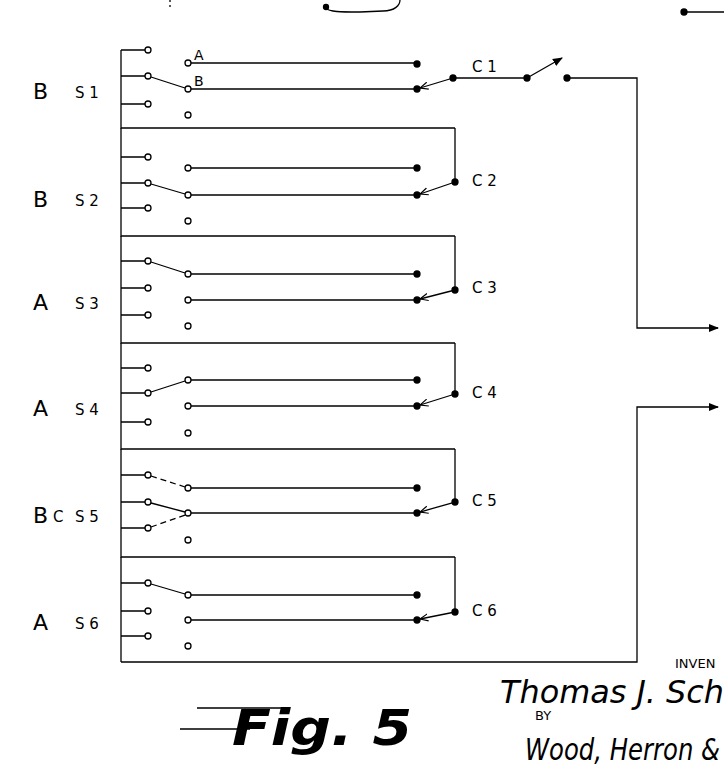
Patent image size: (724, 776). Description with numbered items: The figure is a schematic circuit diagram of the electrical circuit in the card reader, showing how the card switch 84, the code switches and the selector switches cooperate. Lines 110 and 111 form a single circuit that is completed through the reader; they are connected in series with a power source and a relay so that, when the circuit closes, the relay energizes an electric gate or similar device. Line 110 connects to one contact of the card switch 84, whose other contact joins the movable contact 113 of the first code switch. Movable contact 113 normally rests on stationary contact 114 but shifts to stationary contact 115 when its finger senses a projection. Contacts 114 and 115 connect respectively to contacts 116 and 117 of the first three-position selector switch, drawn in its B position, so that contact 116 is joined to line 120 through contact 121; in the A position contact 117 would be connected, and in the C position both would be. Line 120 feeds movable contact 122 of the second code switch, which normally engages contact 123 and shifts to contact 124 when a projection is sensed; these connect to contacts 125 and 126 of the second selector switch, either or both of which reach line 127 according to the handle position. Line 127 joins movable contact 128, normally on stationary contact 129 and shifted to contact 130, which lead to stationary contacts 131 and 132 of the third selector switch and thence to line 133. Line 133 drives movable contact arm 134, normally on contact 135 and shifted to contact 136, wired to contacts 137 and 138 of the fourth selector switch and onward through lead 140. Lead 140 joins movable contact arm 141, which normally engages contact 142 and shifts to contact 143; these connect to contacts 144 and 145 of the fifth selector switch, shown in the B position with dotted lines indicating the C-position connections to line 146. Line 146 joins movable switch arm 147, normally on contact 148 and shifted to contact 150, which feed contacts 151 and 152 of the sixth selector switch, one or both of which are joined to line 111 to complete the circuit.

The card switch 84 is at (552, 72).
The line 110 is at (682, 326).
The line 111 is at (240, 664).
The movable contact 113 is at (442, 86).
The stationary contact 114 is at (416, 91).
The stationary contact 115 is at (417, 62).
The contact 116 is at (189, 92).
The contact 117 is at (189, 60).
The line 120 is at (273, 130).
The contact 121 is at (151, 74).
The movable contact 122 is at (442, 190).
The contact 123 is at (415, 197).
The contact 124 is at (417, 166).
The contact 125 is at (192, 198).
The contact 126 is at (186, 165).
The line 127 is at (274, 238).
The movable contact 128 is at (443, 296).
The stationary contact 129 is at (416, 303).
The contact 130 is at (417, 271).
The stationary contact 131 is at (191, 303).
The stationary contact 132 is at (187, 271).
The line 133 is at (268, 345).
The movable contact arm 134 is at (443, 400).
The contact 135 is at (416, 409).
The contact 136 is at (417, 377).
The contact 137 is at (191, 409).
The contact 138 is at (186, 377).
The lead 140 is at (264, 451).
The movable contact arm 141 is at (443, 507).
The contact 142 is at (416, 516).
The contact 143 is at (417, 485).
The contact 144 is at (191, 516).
The contact 145 is at (188, 485).
The line 146 is at (270, 559).
The movable switch arm 147 is at (443, 616).
The contact 148 is at (416, 623).
The contact 150 is at (417, 592).
The contact 151 is at (191, 623).
The contact 152 is at (187, 592).